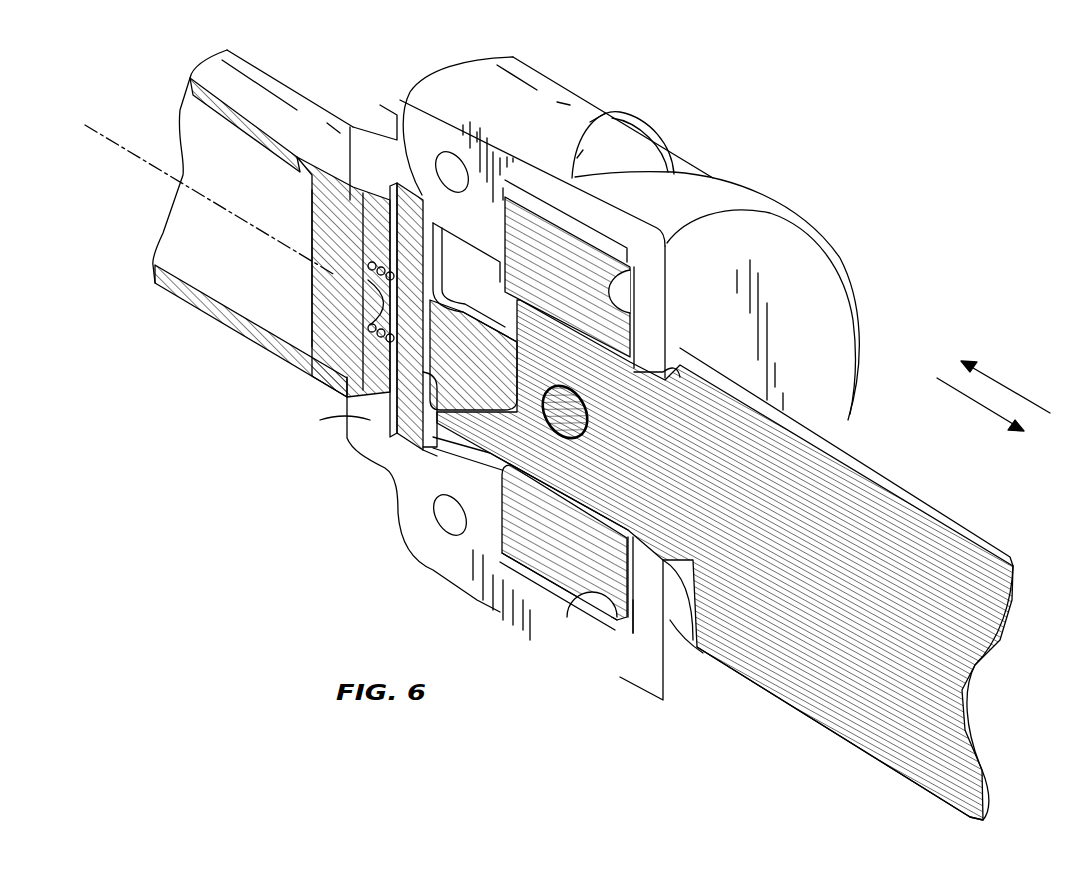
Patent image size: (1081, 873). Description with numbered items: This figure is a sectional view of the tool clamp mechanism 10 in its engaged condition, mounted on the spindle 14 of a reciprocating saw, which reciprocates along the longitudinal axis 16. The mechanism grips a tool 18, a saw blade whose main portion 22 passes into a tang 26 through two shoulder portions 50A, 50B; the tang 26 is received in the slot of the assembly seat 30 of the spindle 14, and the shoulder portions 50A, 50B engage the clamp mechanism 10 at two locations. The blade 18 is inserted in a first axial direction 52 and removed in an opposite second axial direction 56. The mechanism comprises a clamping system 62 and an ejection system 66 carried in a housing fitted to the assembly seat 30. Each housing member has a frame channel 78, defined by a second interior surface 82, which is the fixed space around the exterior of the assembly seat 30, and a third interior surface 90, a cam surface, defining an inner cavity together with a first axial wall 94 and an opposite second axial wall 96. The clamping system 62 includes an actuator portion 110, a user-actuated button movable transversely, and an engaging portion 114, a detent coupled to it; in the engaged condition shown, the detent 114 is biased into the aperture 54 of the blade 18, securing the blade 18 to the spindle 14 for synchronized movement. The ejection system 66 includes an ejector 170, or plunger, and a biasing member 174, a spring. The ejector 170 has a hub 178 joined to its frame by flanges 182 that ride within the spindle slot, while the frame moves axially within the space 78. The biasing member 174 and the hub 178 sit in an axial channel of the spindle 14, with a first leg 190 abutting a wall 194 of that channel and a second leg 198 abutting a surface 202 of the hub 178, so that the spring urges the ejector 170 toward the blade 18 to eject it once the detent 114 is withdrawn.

The tool clamp mechanism 10 is at (848, 113).
The spindle 14 is at (277, 78).
The longitudinal axis 16 is at (148, 167).
The tool 18 is at (930, 510).
The main portion 22 is at (862, 715).
The tang 26 is at (660, 640).
The assembly seat 30 is at (447, 262).
The shoulder portion 50A is at (687, 640).
The shoulder portion 50B is at (667, 375).
The first axial direction 52 is at (1007, 384).
The aperture 54 is at (558, 448).
The second axial direction 56 is at (982, 404).
The clamping system 62 is at (522, 558).
The ejection system 66 is at (360, 342).
The frame channel 78 is at (493, 473).
The second interior surface 82 is at (437, 532).
The third interior surface 90 is at (575, 588).
The first axial wall 94 is at (490, 250).
The second axial wall 96 is at (542, 328).
The actuator portion 110 is at (625, 620).
The engaging portion 114 is at (640, 367).
The ejector 170 is at (420, 205).
The biasing member 174 is at (368, 302).
The hub 178 is at (510, 310).
The flanges 182 is at (452, 460).
The first leg 190 is at (393, 188).
The wall 194 is at (365, 293).
The second leg 198 is at (372, 348).
The surface 202 is at (395, 422).